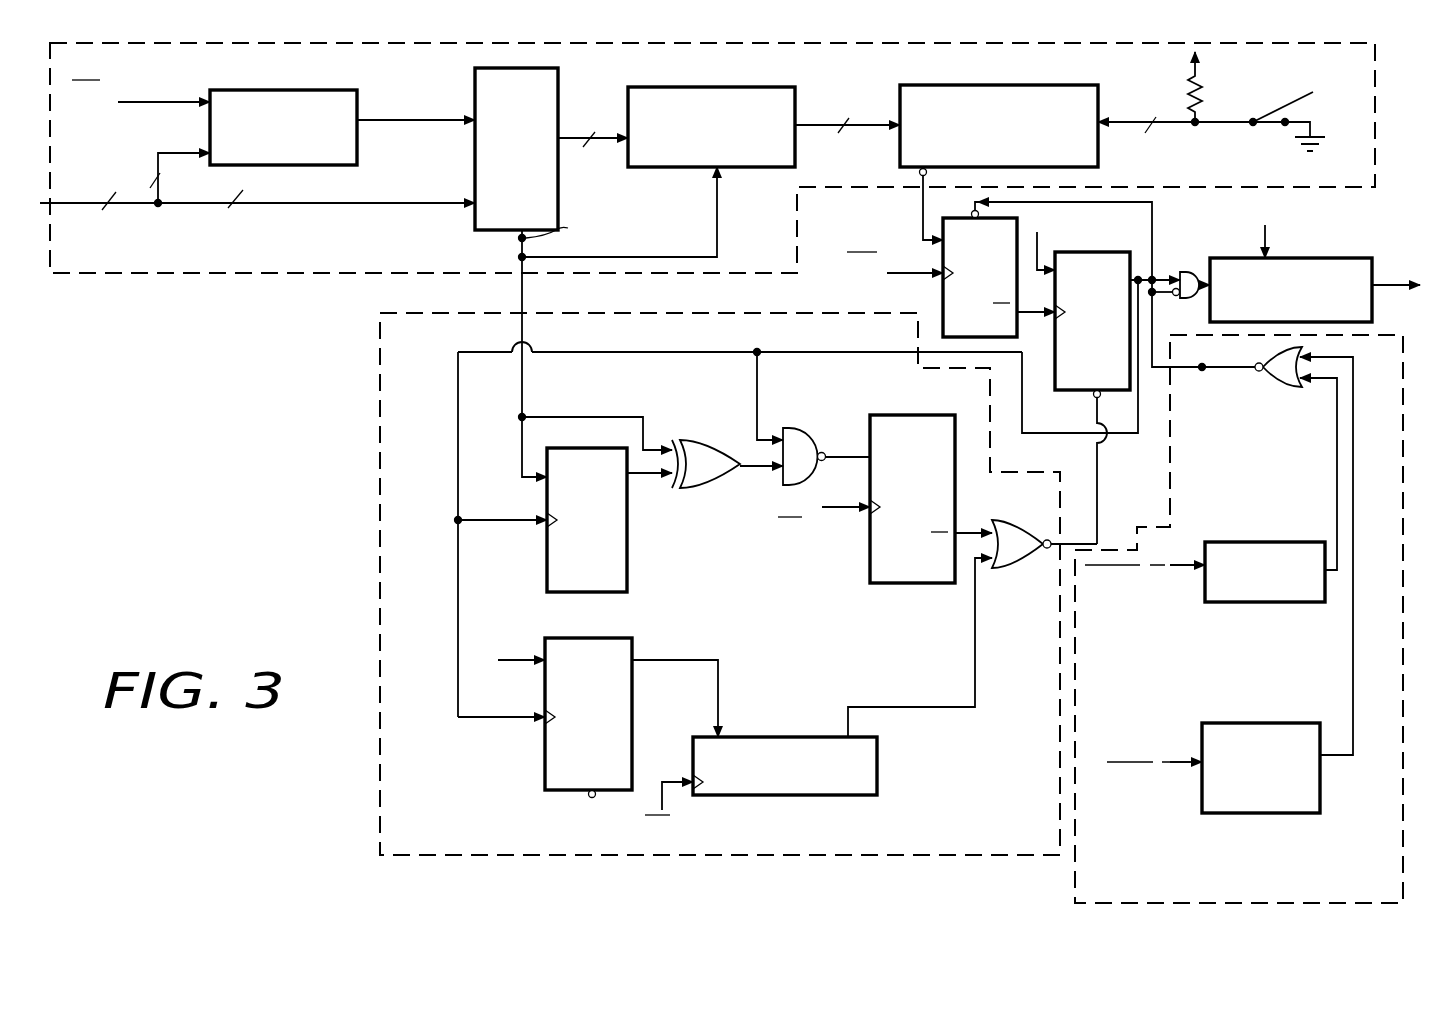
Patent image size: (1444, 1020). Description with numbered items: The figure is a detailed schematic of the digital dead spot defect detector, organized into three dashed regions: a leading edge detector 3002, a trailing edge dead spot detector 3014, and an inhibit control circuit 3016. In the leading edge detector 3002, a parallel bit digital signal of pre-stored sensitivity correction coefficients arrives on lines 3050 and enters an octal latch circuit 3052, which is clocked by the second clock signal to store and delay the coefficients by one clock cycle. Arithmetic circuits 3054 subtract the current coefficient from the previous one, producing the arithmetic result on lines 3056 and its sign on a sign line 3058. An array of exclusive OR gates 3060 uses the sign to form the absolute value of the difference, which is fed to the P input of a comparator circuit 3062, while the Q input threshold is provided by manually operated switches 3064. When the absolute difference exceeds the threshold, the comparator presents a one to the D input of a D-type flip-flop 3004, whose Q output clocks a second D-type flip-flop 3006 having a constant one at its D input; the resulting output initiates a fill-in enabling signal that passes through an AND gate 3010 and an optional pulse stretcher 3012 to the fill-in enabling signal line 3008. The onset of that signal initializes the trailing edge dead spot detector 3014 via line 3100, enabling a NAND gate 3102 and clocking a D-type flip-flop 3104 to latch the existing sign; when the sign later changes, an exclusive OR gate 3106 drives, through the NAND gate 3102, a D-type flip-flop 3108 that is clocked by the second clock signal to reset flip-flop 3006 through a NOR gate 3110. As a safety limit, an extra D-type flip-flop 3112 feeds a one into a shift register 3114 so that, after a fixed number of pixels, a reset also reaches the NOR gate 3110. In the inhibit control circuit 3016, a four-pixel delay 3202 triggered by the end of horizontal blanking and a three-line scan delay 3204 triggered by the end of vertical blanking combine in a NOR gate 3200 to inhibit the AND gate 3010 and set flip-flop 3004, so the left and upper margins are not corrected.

The correction coefficient difference/threshold detector 3002 is at (218, 291).
The D-type flip-flop 3004 is at (955, 323).
The second D-type flip-flop 3006 is at (1120, 383).
The fill-in enabling signal line 3008 is at (1396, 279).
The AND gate 3010 is at (1168, 272).
The optional pulse stretcher 3012 is at (1316, 250).
The trailing edge dead spot detector 3014 is at (443, 848).
The inhibit control circuit 3016 is at (1094, 898).
The lines 3050 is at (83, 200).
The octal latch circuit 3052 is at (377, 81).
The arithmetic circuits 3054 is at (550, 78).
The lines 3056 is at (603, 142).
The sign line 3058 is at (526, 255).
The array of exclusive OR gates 3060 is at (806, 78).
The comparator circuit 3062 is at (1113, 76).
The manually operated switches 3064 is at (1233, 100).
The line 3100 is at (818, 355).
The NAND gate 3102 is at (816, 420).
The D-type flip-flop 3104 is at (627, 582).
The exclusive OR gate 3106 is at (724, 422).
The D-type flip-flop 3108 is at (887, 562).
The NOR gate 3110 is at (1040, 508).
The extra D-type flip-flop 3112 is at (620, 652).
The shift register 3114 is at (803, 728).
The NOR gate 3200 is at (1280, 390).
The 4-pixel delay 3202 is at (1313, 542).
The 3-line scan delay 3204 is at (1307, 708).